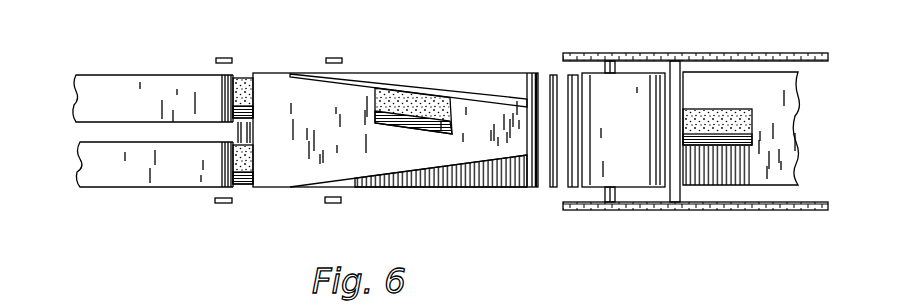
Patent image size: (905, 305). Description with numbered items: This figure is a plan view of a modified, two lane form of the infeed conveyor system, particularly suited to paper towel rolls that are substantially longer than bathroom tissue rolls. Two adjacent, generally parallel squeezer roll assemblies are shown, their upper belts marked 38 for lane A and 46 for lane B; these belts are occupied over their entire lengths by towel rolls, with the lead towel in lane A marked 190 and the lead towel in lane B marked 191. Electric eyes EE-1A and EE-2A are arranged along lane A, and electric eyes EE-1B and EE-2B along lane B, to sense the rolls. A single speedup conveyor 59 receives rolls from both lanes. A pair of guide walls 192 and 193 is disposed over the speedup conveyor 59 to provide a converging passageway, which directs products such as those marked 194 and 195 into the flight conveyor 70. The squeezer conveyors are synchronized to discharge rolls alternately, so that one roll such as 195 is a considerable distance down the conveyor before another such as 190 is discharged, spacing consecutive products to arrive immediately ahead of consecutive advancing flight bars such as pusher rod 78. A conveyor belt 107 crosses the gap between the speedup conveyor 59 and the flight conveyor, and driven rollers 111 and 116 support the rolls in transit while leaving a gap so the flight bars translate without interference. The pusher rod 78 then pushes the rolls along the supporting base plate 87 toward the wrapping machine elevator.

The upper squeezer belt for lane B 46 is at (92, 104).
The upper squeezer belt for lane A 38 is at (80, 188).
The lead towel roll in lane B 191 is at (244, 78).
The lead towel roll in lane A 190 is at (250, 185).
The electric eye EE-1B is at (224, 57).
The electric eye EE-2B is at (331, 57).
The electric eye EE-1A is at (240, 230).
The electric eye EE-2A is at (325, 203).
The speedup conveyor 59 is at (441, 192).
The guide wall 193 is at (485, 96).
The product 195 is at (427, 105).
The guide wall 192 is at (486, 162).
The roller 116 is at (553, 73).
The roller 111 is at (577, 73).
The conveyor belt 107 is at (645, 82).
The pusher rod 78 is at (683, 70).
The flight conveyor 70 is at (718, 208).
The supporting base plate 87 is at (787, 161).
The product 194 is at (735, 122).